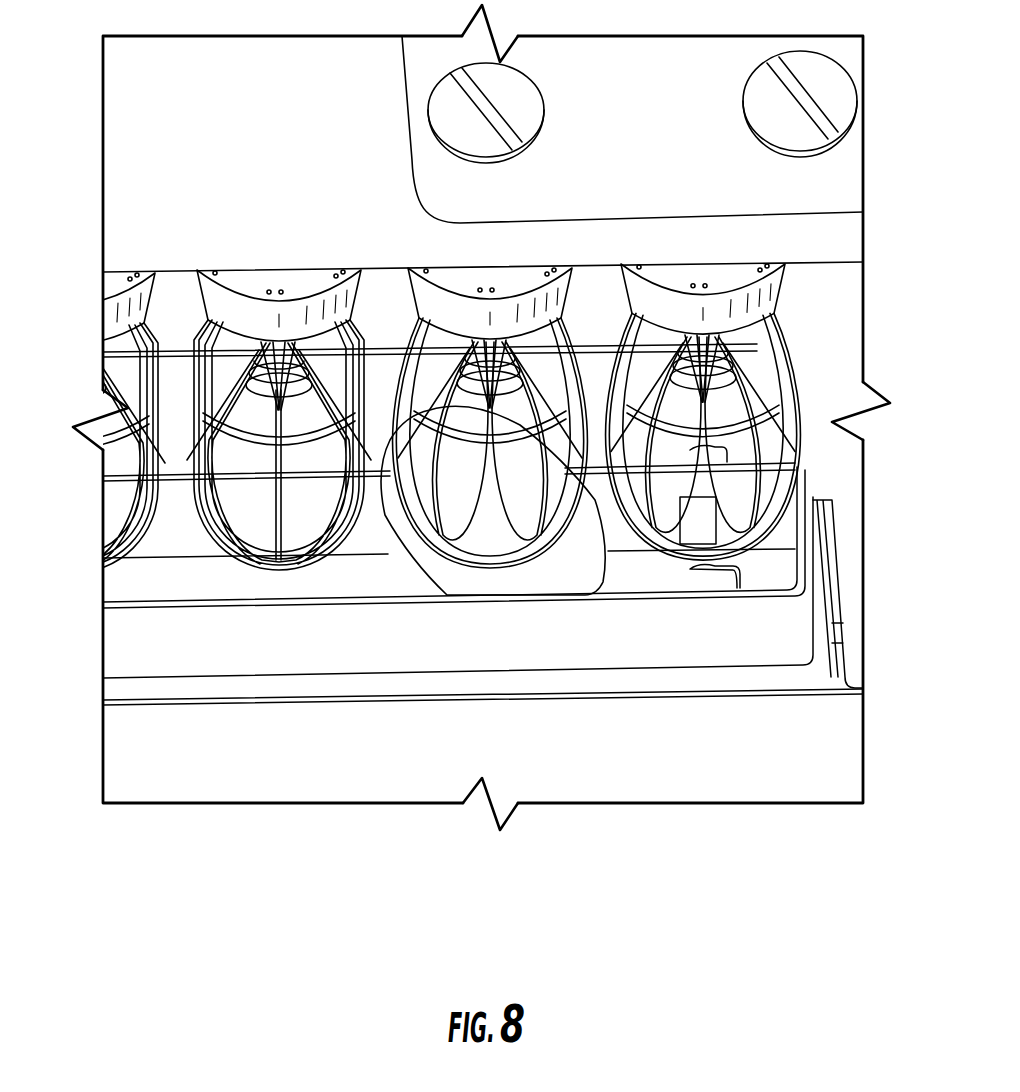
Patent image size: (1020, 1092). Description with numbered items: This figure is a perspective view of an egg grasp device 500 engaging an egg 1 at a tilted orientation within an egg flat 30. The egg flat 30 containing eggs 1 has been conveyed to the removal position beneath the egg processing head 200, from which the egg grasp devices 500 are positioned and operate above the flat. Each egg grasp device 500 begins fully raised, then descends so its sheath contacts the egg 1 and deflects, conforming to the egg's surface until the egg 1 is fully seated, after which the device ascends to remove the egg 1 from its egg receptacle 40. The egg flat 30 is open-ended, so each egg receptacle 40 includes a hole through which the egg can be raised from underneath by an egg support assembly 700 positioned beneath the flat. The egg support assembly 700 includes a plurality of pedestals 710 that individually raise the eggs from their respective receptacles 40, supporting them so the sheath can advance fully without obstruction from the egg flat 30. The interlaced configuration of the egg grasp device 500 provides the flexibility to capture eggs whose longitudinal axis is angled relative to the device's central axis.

The egg processing head 200 is at (132, 203).
The egg grasp device 500 is at (545, 250).
The egg 1 is at (572, 575).
The egg flat 30 is at (132, 657).
The egg receptacle 40 is at (778, 530).
The pedestal 710 is at (762, 568).
The egg support assembly 700 is at (740, 567).